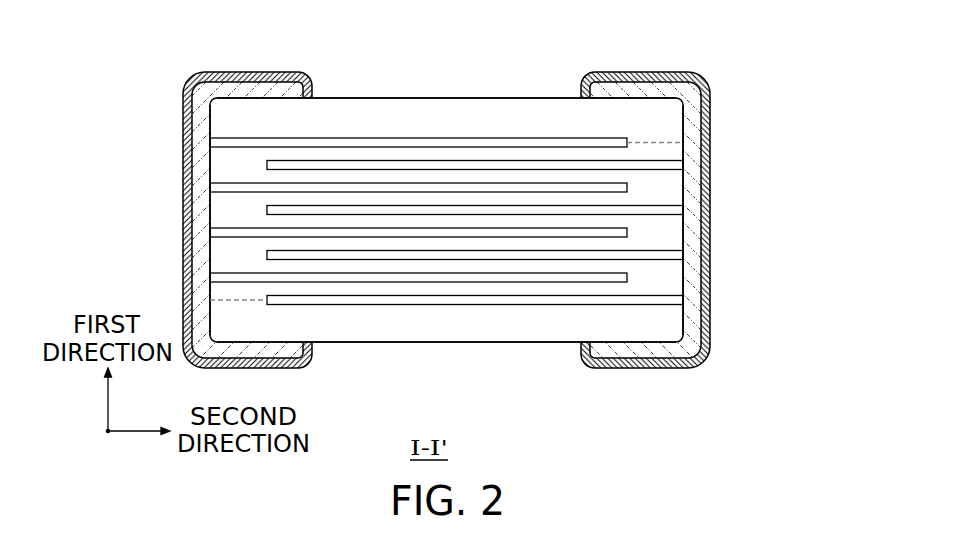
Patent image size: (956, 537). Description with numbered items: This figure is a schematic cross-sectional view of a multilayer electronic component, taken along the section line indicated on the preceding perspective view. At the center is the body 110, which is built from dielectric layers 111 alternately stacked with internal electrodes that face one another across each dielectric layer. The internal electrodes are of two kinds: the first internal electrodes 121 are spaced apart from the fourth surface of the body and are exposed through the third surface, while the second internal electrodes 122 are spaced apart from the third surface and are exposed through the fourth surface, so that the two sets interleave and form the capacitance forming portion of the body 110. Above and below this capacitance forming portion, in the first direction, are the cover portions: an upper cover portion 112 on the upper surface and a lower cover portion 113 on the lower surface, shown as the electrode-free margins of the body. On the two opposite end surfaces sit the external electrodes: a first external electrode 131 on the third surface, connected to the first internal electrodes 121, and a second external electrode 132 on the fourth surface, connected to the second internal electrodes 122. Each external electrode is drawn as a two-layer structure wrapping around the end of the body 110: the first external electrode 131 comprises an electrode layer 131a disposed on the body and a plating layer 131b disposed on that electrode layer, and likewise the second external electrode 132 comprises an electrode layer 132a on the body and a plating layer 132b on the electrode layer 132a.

The body 110 is at (380, 98).
The dielectric layer 111 is at (333, 172).
The upper cover portion 112 is at (452, 115).
The lower cover portion 113 is at (363, 325).
The first internal electrode 121 is at (512, 140).
The second internal electrode 122 is at (572, 165).
The first external electrode 131 is at (172, 220).
The electrode layer 131a is at (188, 150).
The plating layer 131b is at (200, 170).
The second external electrode 132 is at (723, 220).
The electrode layer 132a is at (697, 125).
The plating layer 132b is at (704, 150).